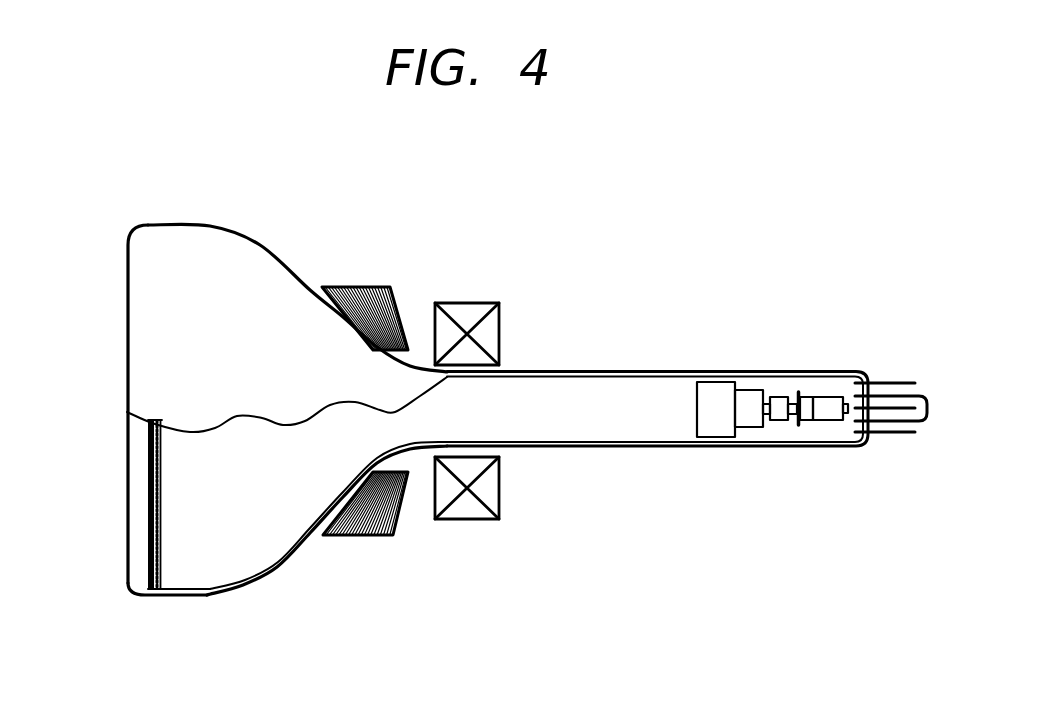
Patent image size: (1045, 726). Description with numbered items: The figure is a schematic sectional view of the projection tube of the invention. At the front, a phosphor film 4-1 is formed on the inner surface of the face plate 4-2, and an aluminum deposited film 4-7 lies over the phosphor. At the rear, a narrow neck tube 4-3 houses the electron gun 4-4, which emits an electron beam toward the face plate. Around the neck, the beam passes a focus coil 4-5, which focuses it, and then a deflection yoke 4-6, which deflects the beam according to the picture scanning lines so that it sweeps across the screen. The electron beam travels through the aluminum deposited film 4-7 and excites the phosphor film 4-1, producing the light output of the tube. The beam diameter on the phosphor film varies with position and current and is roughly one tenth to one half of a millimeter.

The phosphor film 4-1 is at (163, 580).
The face plate 4-2 is at (128, 537).
The neck tube 4-3 is at (678, 368).
The electron gun 4-4 is at (783, 387).
The focus coil 4-5 is at (473, 303).
The deflection yoke 4-6 is at (360, 282).
The aluminum deposited film 4-7 is at (163, 450).